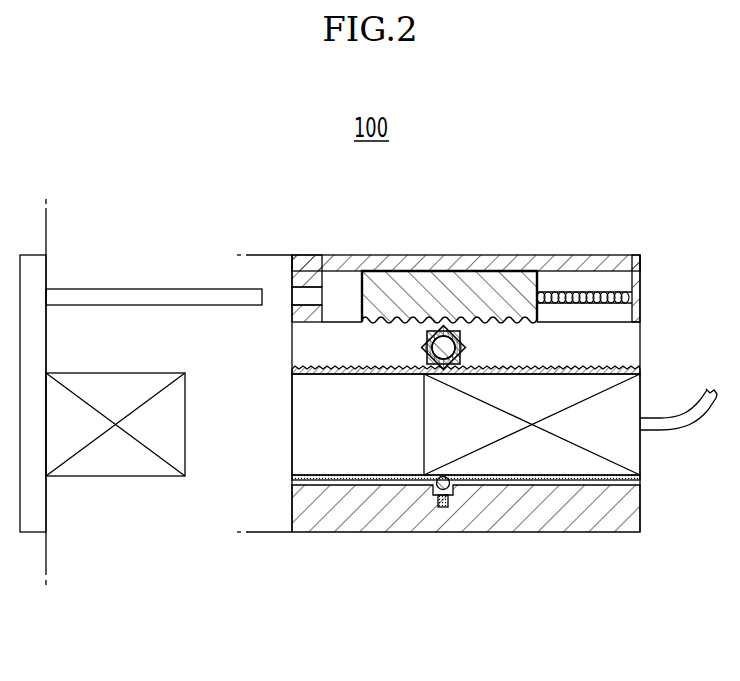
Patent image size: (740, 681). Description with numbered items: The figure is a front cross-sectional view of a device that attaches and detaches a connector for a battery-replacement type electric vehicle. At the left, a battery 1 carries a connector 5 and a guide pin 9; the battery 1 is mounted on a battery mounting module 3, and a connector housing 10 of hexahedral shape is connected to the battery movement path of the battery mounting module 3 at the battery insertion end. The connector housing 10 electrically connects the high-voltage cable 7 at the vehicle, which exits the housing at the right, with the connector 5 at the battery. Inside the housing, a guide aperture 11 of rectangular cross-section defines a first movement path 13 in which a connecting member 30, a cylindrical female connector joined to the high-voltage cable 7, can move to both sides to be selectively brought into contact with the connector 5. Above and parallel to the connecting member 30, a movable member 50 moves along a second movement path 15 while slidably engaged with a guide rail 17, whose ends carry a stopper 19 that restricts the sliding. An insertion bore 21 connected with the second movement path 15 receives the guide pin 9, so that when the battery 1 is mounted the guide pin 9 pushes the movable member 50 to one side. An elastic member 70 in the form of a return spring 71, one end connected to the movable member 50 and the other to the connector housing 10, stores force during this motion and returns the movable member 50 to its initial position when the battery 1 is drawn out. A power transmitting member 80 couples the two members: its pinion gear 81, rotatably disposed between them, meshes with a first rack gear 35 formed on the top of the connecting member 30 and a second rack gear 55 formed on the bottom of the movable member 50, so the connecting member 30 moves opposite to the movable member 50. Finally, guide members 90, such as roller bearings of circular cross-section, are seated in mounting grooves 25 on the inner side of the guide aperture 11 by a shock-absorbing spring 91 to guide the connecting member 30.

The battery 1 is at (46, 558).
The battery mounting module 3 is at (267, 255).
The connector 5 is at (135, 476).
The high-voltage cable 7 is at (677, 423).
The guide pin 9 is at (144, 297).
The connector housing 10 is at (487, 263).
The guide aperture 11 is at (335, 488).
The first movement path 13 is at (605, 353).
The second movement path 15 is at (586, 284).
The guide rail 17 is at (357, 278).
The stopper 19 is at (332, 279).
The insertion bore 21 is at (308, 297).
The mounting grooves 25 is at (452, 500).
The connecting member 30 is at (378, 480).
The first rack gear 35 is at (331, 365).
The movable member 50 is at (451, 290).
The second rack gear 55 is at (520, 317).
The elastic member 70 is at (549, 278).
The return spring 71 is at (620, 304).
The power transmitting member 80 is at (419, 355).
The pinion gear 81 is at (427, 327).
The guide members 90 is at (433, 490).
The shock-absorbing spring 91 is at (440, 500).